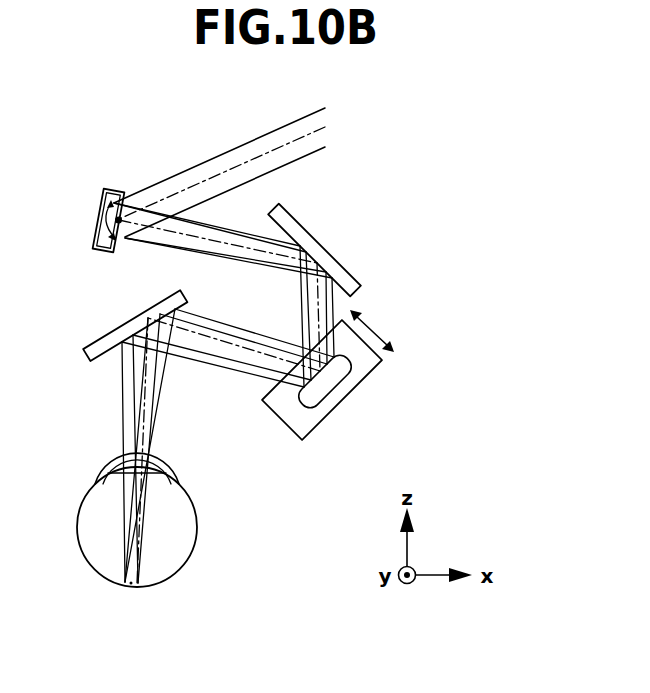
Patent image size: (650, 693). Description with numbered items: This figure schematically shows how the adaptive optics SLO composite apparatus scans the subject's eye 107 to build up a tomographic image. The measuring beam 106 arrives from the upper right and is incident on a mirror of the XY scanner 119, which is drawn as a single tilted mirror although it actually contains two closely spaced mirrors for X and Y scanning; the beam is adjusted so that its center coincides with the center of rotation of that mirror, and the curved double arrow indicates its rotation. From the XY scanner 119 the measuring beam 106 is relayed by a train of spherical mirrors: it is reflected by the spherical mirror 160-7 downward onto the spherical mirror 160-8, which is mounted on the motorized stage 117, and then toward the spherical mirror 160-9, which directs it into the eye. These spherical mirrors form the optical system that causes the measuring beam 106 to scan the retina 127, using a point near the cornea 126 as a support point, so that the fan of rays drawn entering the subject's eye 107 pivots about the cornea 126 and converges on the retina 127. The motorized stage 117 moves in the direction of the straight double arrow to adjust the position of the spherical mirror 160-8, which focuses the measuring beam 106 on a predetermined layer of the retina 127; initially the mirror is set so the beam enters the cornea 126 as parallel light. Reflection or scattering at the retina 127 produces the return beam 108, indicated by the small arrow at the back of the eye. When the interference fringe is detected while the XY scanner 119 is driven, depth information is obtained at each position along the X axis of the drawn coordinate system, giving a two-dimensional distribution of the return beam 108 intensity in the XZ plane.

The measuring beam 106 is at (165, 180).
The XY scanner 119 is at (94, 208).
The spherical mirror 160-7 is at (310, 238).
The motorized stage 117 is at (372, 372).
The spherical mirror 160-8 is at (322, 400).
The spherical mirror 160-9 is at (98, 340).
The subject's eye 107 is at (196, 518).
The cornea 126 is at (150, 463).
The return beam 108 is at (154, 573).
The retina 127 is at (137, 584).